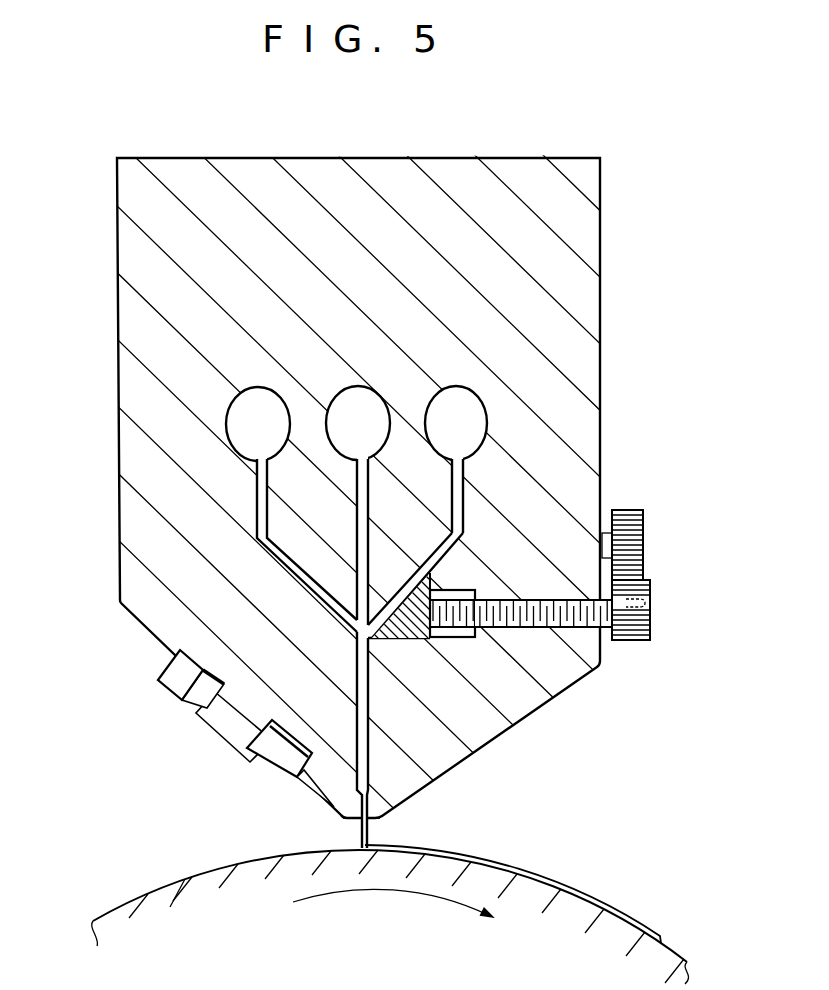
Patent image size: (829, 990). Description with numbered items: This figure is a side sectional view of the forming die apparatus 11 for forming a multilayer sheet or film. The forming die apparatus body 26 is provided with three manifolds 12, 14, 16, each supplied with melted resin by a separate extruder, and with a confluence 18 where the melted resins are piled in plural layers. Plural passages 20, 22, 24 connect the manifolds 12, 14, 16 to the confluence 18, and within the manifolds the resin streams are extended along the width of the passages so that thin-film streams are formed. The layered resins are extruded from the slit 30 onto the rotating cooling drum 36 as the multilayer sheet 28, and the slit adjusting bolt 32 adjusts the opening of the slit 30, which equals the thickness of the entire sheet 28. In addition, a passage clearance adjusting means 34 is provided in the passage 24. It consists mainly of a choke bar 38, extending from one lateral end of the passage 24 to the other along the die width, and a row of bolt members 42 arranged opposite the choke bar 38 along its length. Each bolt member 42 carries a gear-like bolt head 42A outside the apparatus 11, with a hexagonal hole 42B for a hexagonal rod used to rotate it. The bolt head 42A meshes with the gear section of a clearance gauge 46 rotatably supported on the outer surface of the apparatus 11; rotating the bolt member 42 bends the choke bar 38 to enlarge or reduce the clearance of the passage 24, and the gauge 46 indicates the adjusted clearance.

The forming die apparatus 11 is at (630, 292).
The forming die apparatus body 26 is at (140, 247).
The manifold 12 is at (243, 415).
The manifold 14 is at (335, 393).
The manifold 16 is at (467, 420).
The confluence 18 is at (355, 627).
The passage 20 is at (258, 489).
The passage 22 is at (463, 480).
The passage 24 is at (463, 503).
The slit 30 is at (357, 803).
The choke bar 38 is at (407, 627).
The passage clearance adjusting means 34 is at (448, 652).
The bolt member 42 is at (545, 628).
The bolt head 42A is at (632, 640).
The hexagonal hole 42B is at (647, 603).
The clearance gauge 46 is at (653, 543).
The slit adjusting bolt 32 is at (172, 681).
The multilayer sheet 28 is at (530, 870).
The cooling drum 36 is at (213, 905).